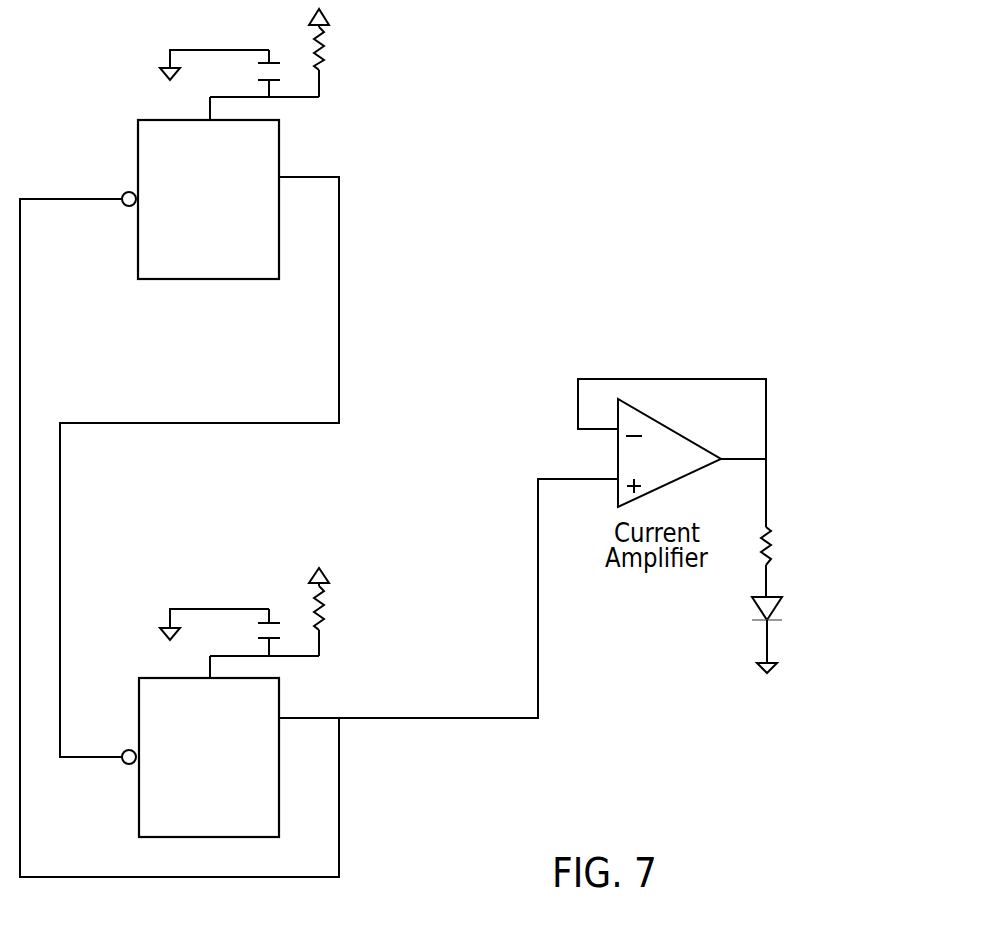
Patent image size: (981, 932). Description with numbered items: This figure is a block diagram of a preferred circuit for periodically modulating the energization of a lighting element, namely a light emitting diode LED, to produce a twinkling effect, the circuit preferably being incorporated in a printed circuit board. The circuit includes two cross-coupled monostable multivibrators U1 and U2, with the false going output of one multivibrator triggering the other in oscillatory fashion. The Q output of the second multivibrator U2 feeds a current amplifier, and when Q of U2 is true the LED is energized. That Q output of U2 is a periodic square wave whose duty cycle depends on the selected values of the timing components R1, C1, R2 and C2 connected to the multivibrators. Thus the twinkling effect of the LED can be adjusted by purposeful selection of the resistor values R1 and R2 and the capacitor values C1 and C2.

The timing resistor R1 is at (341, 62).
The timing capacitor C1 is at (220, 73).
The monostable multivibrator U1 is at (200, 199).
The timing resistor R2 is at (341, 621).
The timing capacitor C2 is at (220, 632).
The monostable multivibrator U2 is at (200, 757).
The light emitting diode LED is at (798, 634).